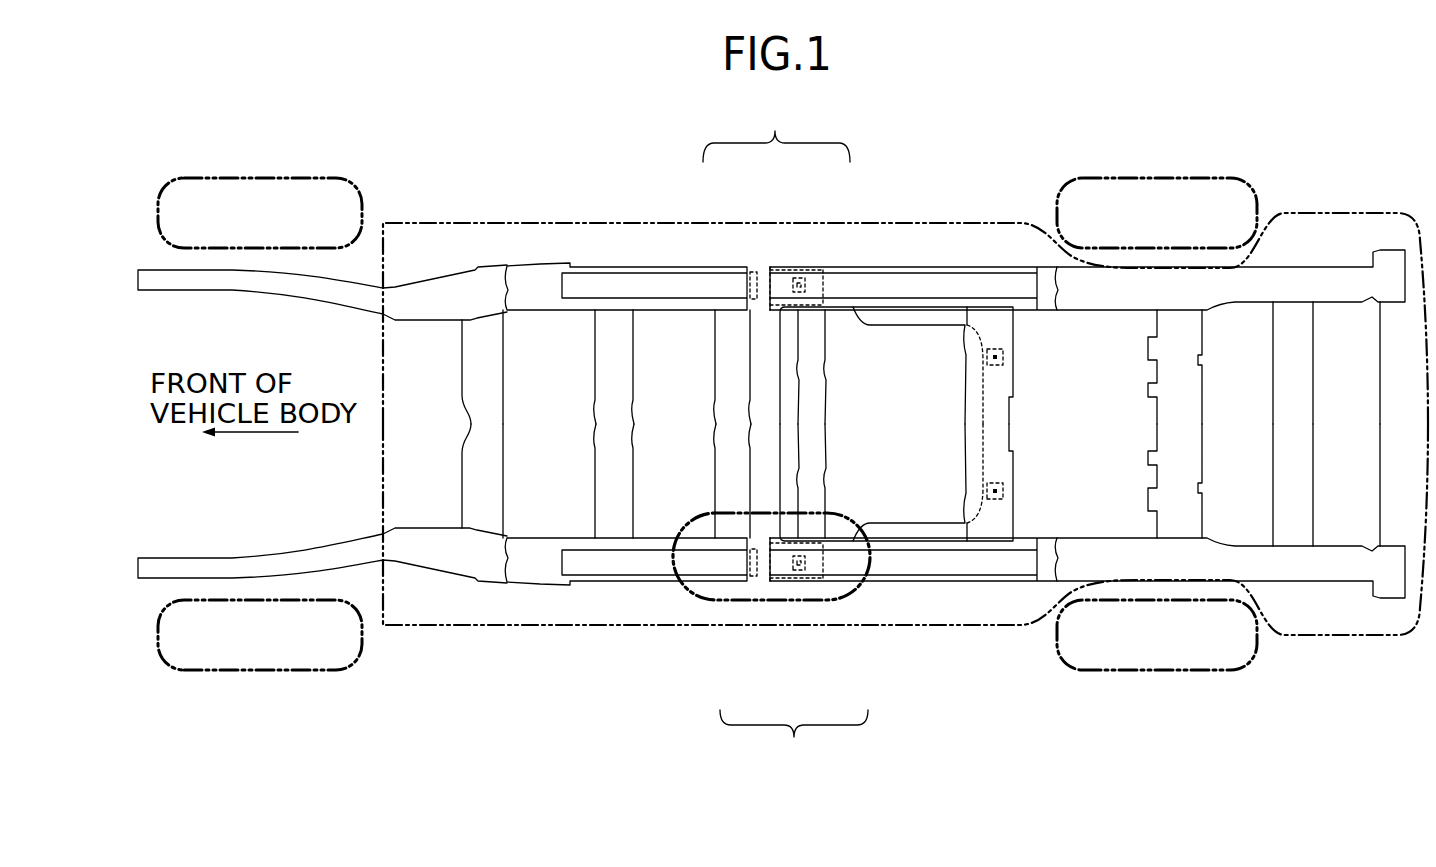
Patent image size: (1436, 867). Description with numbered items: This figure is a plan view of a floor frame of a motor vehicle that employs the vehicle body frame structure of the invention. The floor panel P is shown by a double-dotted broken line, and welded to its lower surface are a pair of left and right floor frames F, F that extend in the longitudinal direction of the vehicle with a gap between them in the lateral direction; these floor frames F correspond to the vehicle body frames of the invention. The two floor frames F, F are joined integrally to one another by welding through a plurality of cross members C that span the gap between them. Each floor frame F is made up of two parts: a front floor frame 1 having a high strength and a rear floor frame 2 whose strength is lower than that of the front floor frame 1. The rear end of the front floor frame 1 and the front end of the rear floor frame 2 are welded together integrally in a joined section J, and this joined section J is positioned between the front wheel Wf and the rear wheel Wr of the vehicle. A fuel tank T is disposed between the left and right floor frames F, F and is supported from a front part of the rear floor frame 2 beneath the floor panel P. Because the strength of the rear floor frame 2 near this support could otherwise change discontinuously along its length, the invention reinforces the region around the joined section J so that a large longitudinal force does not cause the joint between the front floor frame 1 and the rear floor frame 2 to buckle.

The floor panel P is at (905, 223).
The front wheel Wf is at (343, 742).
The rear wheel Wr is at (1197, 742).
The floor frame F is at (785, 437).
The front floor frame 1 is at (730, 578).
The rear floor frame 2 is at (885, 578).
The joined section J is at (805, 588).
The cross member C is at (1282, 418).
The fuel tank T is at (888, 435).